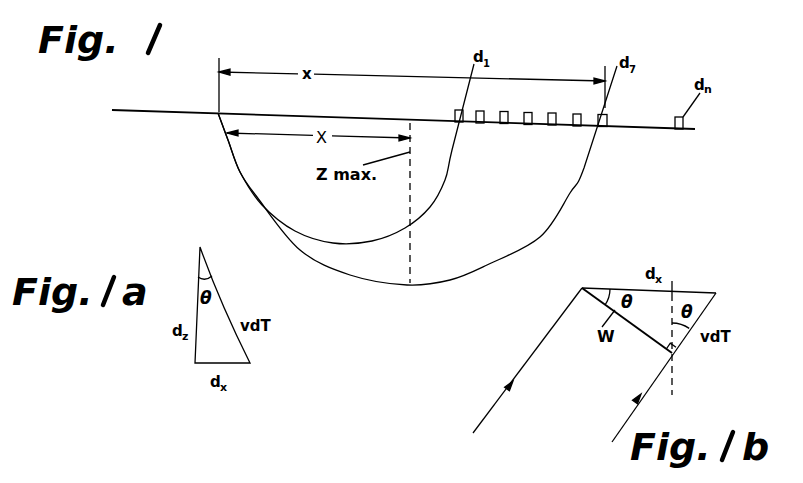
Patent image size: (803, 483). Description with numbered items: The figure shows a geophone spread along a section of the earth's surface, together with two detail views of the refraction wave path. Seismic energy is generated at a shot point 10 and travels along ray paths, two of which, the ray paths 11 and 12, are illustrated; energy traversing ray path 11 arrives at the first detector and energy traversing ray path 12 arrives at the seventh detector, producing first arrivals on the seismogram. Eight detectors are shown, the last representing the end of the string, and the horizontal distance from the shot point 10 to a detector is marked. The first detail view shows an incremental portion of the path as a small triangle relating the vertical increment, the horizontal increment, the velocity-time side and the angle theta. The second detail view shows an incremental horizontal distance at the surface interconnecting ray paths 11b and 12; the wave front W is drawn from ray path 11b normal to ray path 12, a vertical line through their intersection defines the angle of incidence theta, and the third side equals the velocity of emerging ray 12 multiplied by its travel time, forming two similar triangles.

In FIG. 1, the shot point 10 is at (218, 112).
In FIG. 1, the ray path 11 is at (288, 227).
In FIG. 1, the ray path 12 is at (537, 237).
In FIG. 1B, the ray path 12 is at (628, 414).
In FIG. 1B, the ray path 11b is at (530, 360).